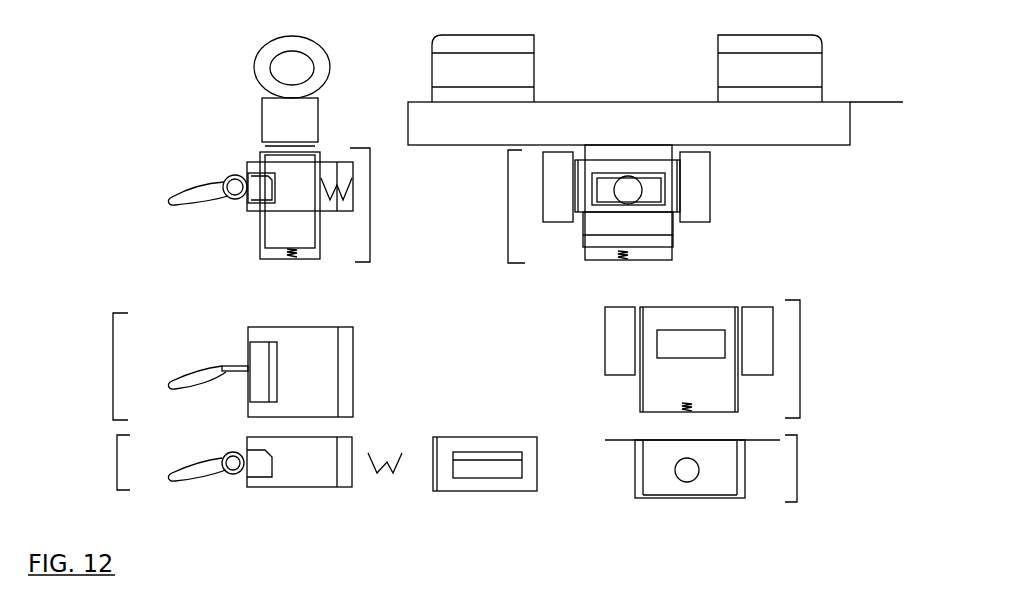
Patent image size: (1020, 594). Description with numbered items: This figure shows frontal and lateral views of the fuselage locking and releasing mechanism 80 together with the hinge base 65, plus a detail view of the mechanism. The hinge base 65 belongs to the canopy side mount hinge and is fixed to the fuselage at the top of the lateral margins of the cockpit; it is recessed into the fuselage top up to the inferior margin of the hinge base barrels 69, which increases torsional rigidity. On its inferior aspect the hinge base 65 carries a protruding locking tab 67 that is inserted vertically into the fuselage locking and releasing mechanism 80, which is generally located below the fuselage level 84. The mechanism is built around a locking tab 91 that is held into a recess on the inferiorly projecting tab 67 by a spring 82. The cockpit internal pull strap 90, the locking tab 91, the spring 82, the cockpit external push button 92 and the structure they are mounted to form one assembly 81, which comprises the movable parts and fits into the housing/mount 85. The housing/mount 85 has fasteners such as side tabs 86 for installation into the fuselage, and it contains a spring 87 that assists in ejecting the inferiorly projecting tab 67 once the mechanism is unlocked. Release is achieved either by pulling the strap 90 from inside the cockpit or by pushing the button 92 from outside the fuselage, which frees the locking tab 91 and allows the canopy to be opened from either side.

The hinge base 65 is at (278, 120).
The locking tab 67 is at (285, 230).
The hinge base barrels 69 is at (440, 47).
The fuselage locking and releasing mechanism 80 is at (370, 202).
The assembly 81 is at (238, 208).
The spring 82 is at (337, 185).
The fuselage level 84 is at (880, 102).
The fuselage locking and releasing mechanism housing/mount 85 is at (800, 342).
The side tabs 86 is at (620, 335).
The spring 87 is at (637, 255).
The pull strap 90 is at (195, 387).
The locking tab 91 is at (261, 355).
The push button 92 is at (344, 340).